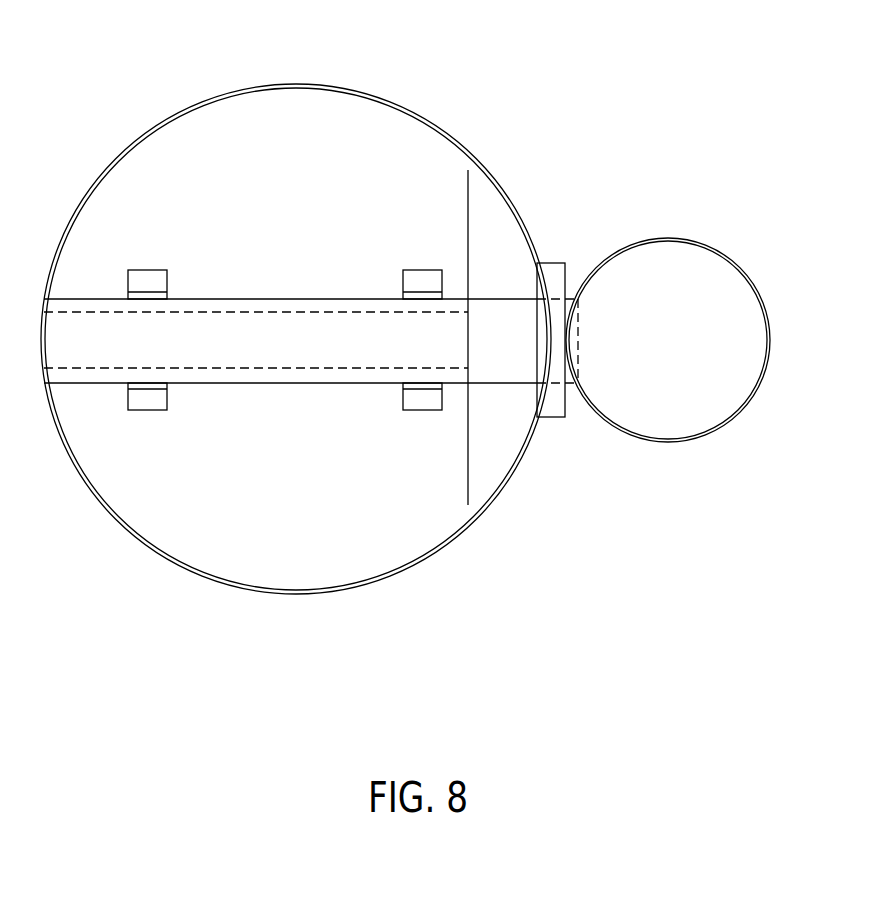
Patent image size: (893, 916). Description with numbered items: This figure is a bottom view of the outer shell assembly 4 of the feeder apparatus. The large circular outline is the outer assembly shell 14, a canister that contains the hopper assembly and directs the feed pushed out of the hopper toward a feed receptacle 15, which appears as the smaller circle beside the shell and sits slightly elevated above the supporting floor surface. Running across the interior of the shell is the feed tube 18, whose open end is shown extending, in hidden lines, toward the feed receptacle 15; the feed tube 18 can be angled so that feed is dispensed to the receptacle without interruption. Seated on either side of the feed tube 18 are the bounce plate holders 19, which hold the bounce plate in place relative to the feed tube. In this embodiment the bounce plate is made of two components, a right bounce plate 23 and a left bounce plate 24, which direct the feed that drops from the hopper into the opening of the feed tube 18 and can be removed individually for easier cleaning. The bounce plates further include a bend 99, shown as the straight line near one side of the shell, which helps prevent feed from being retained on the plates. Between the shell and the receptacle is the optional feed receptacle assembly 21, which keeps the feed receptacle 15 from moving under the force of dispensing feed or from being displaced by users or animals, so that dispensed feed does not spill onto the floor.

The outer shell assembly 4 is at (488, 124).
The outer assembly shell 14 is at (372, 98).
The feed receptacle 15 is at (684, 415).
The feed tube 18 is at (578, 322).
The bounce plate holders 19 is at (403, 278).
The feed receptacle assembly 21 is at (548, 418).
The right bounce plate 23 is at (190, 140).
The left bounce plate 24 is at (197, 521).
The bend 99 is at (468, 240).